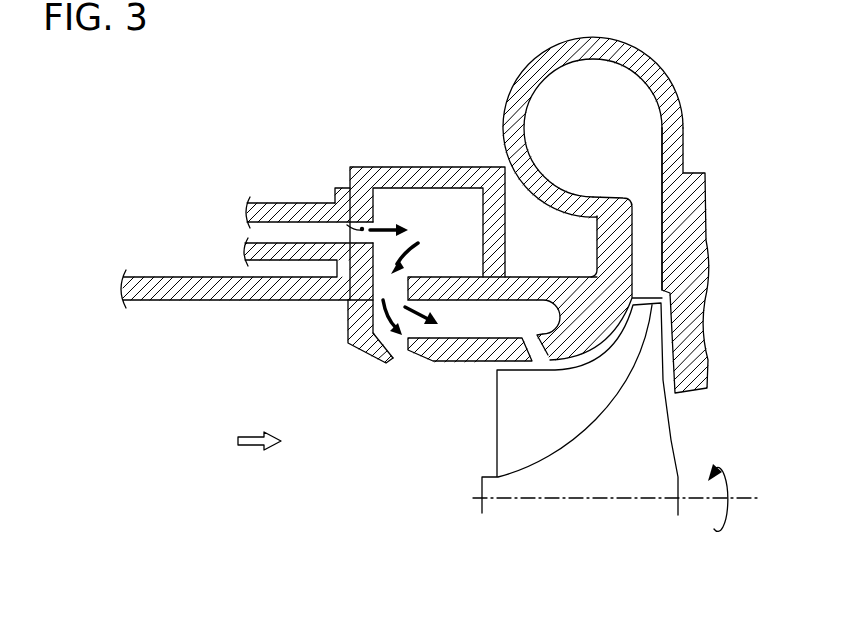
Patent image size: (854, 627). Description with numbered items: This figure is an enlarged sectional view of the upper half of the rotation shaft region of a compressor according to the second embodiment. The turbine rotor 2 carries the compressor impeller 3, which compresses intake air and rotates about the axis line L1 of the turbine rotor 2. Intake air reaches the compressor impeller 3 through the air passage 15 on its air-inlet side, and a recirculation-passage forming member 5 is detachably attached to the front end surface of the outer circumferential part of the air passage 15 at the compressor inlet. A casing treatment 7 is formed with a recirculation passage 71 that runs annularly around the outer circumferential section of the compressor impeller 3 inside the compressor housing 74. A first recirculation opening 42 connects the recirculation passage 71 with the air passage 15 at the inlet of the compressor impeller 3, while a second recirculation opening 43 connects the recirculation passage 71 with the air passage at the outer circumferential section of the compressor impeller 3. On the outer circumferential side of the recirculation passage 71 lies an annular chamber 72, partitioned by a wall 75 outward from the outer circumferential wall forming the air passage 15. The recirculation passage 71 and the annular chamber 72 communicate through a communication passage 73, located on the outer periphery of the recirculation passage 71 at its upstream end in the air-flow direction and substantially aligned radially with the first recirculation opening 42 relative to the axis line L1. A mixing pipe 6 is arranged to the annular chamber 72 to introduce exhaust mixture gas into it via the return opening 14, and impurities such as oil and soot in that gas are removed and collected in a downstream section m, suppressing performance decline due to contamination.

The turbine rotor 2 is at (709, 546).
The compressor impeller 3 is at (672, 445).
The recirculation-passage forming member 5 is at (357, 353).
The mixing pipe 6 is at (288, 203).
The casing treatment 7 is at (436, 388).
The return opening 14 is at (347, 190).
The air passage 15 is at (230, 497).
The first recirculation opening 42 is at (407, 360).
The second recirculation opening 43 is at (537, 355).
The recirculation passage 71 is at (495, 313).
The annular chamber 72 is at (452, 202).
The communication passage 73 is at (385, 293).
The compressor housing 74 is at (678, 93).
The wall 75 is at (452, 277).
The downstream section m is at (464, 265).
The axis line L1 is at (629, 498).